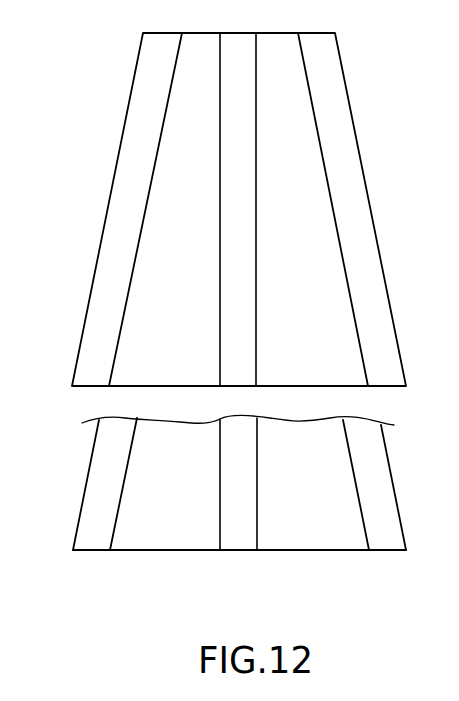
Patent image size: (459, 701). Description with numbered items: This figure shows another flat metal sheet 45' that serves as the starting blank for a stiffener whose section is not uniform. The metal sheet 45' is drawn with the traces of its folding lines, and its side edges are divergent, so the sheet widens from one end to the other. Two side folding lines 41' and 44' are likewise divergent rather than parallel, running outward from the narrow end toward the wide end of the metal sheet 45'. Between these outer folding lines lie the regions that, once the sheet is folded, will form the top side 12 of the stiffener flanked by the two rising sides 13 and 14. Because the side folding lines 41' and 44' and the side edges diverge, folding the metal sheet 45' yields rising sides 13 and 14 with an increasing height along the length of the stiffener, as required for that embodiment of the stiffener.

The metal sheet 45' is at (213, 209).
The side folding line 41' is at (85, 522).
The rising side 14 is at (174, 534).
The top side 12 is at (239, 535).
The rising side 13 is at (318, 535).
The side folding line 44' is at (395, 525).